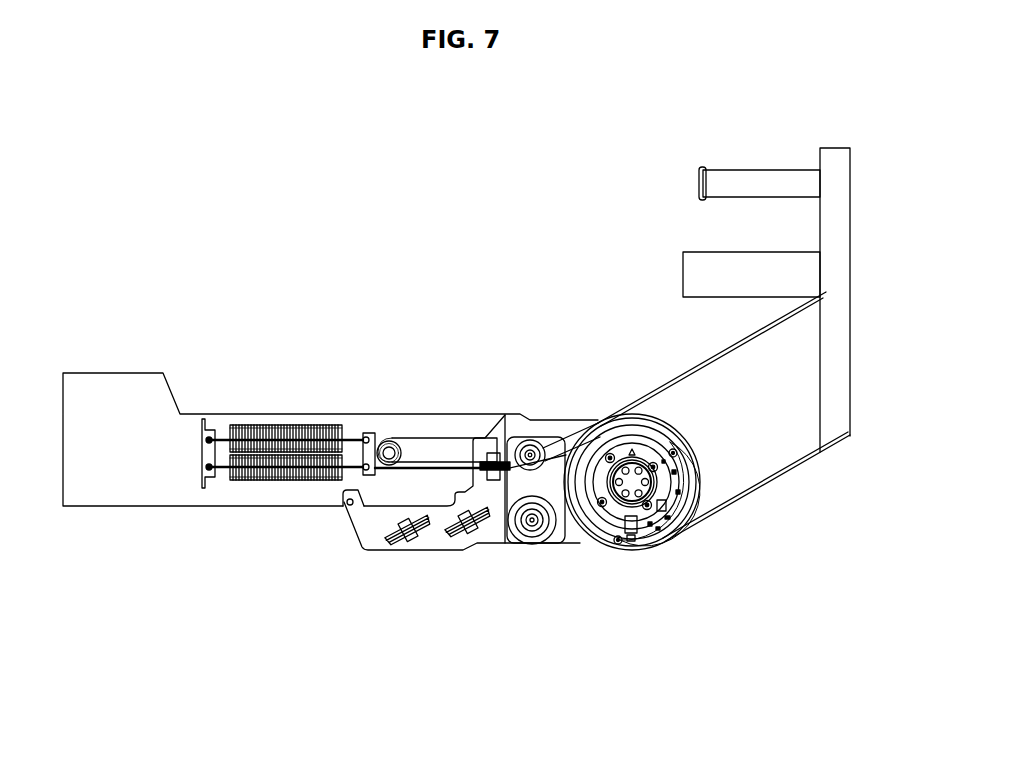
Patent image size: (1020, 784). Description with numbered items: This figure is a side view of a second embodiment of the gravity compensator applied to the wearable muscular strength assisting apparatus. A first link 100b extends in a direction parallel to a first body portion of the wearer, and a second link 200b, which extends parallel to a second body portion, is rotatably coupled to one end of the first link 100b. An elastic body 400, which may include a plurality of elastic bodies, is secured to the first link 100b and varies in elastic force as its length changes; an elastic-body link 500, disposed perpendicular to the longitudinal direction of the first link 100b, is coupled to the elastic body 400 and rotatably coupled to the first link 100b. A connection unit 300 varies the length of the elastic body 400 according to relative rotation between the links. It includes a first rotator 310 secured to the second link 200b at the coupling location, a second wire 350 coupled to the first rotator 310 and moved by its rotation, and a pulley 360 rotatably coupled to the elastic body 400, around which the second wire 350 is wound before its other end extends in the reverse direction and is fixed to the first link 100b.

The first link 100b is at (372, 540).
The second link 200b is at (765, 467).
The connection unit 300 is at (611, 520).
The first rotator 310 is at (633, 535).
The second wire 350 is at (455, 437).
The pulley 360 is at (389, 443).
The elastic body 400 is at (288, 465).
The elastic-body link 500 is at (210, 478).